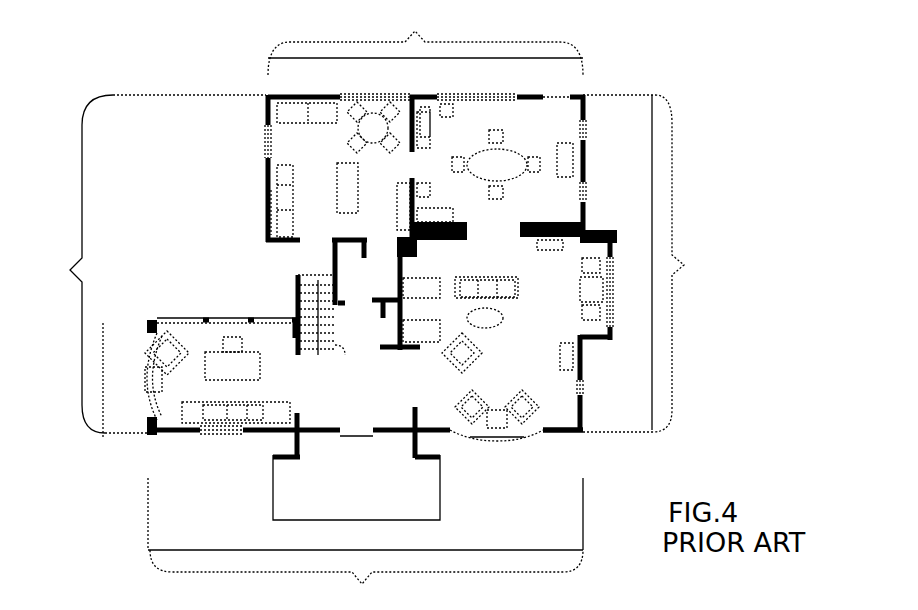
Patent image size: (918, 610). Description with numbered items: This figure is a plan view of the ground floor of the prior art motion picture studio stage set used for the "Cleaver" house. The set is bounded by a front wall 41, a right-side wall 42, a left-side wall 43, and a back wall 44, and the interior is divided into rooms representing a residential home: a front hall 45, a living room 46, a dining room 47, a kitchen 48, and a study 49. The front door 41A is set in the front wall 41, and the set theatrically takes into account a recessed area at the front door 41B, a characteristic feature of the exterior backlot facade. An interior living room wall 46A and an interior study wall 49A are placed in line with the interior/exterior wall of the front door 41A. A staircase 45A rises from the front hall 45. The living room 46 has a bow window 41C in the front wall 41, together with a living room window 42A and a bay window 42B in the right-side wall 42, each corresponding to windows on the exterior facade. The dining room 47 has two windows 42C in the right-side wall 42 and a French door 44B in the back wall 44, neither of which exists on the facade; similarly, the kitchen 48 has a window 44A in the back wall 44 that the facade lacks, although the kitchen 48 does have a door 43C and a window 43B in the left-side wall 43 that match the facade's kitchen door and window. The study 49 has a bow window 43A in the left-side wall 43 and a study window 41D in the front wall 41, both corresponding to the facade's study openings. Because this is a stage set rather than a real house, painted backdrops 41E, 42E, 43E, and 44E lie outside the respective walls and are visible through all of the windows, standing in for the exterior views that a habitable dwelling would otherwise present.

The front wall 41 is at (365, 544).
The front door 41A is at (410, 468).
The recessed area at the front door 41B is at (385, 520).
The bow window 41C is at (497, 445).
The study window 41D is at (222, 436).
The backdrop 41E is at (222, 546).
The right-side wall 42 is at (656, 263).
The living room window 42A is at (587, 397).
The bay window 42B is at (632, 287).
The dining room windows 42C is at (586, 122).
The backdrop 42E is at (648, 132).
The left-side wall 43 is at (146, 264).
The bow window 43A is at (135, 380).
The window 43B is at (264, 212).
The door 43C is at (264, 152).
The backdrop 43E is at (127, 339).
The back wall 44 is at (425, 38).
The window 44A is at (373, 93).
The French door 44B is at (492, 93).
The backdrop 44E is at (558, 62).
The front hall 45 is at (352, 378).
The staircase 45A is at (327, 332).
The living room 46 is at (522, 343).
The interior living room wall 46A is at (543, 424).
The dining room 47 is at (495, 163).
The kitchen 48 is at (353, 169).
The study 49 is at (202, 361).
The interior study wall 49A is at (168, 421).